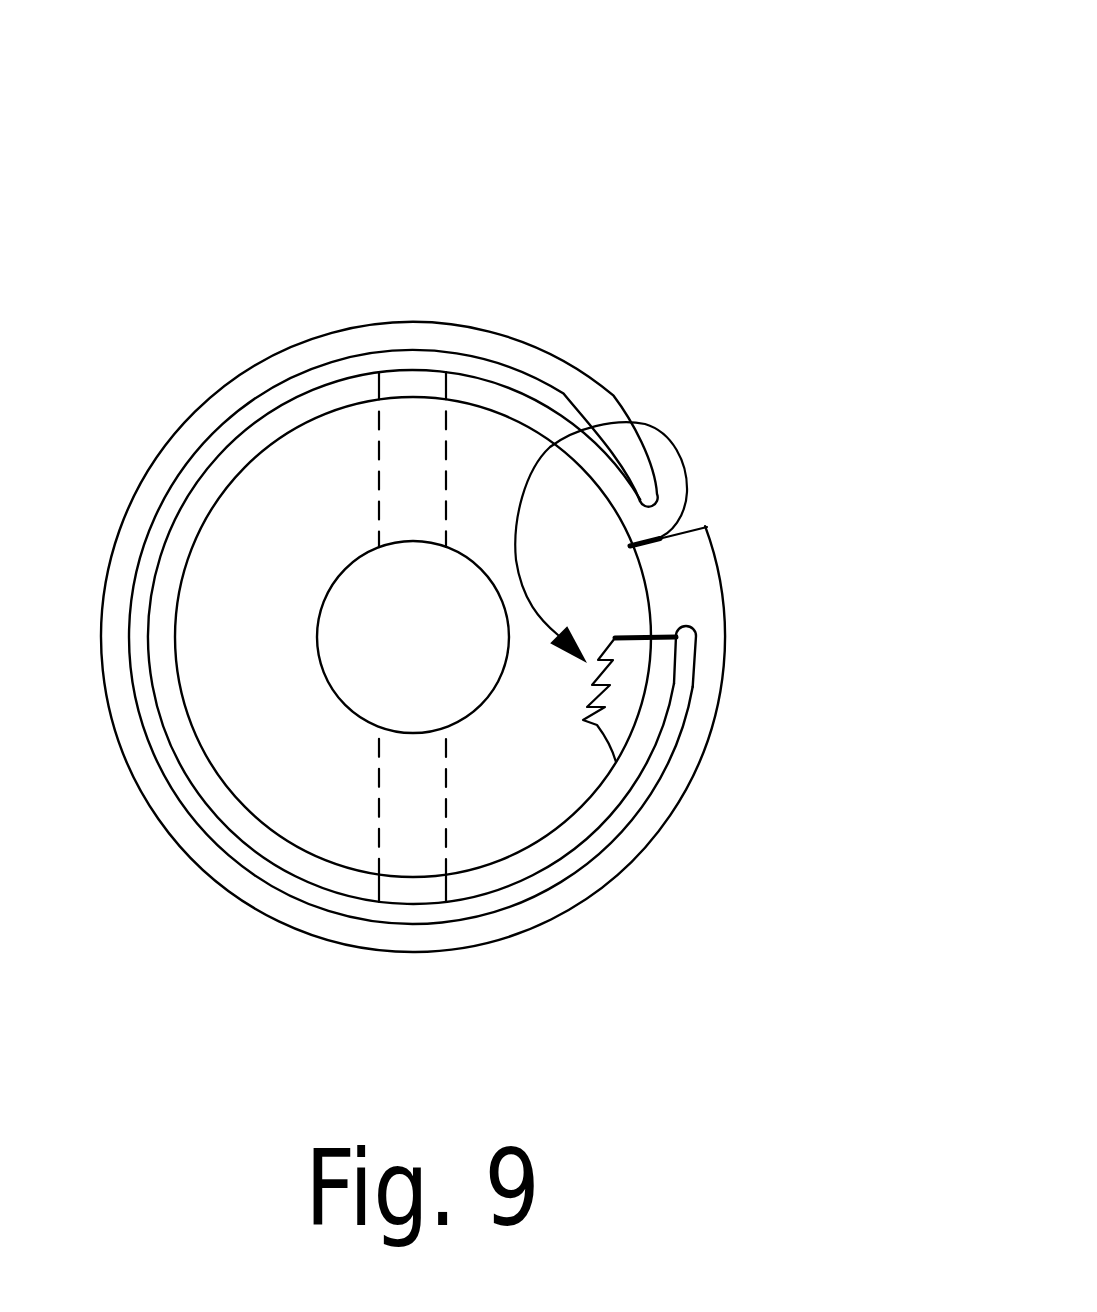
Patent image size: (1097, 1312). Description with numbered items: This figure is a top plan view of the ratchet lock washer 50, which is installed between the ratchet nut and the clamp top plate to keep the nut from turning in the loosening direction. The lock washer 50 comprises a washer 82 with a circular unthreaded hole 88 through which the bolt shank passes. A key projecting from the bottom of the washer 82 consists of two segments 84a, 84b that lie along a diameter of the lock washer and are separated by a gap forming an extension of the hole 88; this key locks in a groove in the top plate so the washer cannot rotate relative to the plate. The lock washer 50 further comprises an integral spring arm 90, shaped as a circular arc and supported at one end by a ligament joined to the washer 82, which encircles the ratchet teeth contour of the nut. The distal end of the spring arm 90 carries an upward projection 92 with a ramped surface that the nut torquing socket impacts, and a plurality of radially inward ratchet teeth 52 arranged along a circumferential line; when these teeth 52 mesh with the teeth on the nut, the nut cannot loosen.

The ratchet lock washer 50 is at (733, 170).
The ratchet teeth 52 is at (640, 427).
The washer 82 is at (234, 700).
The key segment 84a is at (418, 812).
The key segment 84b is at (447, 497).
The circular unthreaded hole 88 is at (318, 627).
The spring arm 90 is at (470, 368).
The upward projection 92 is at (647, 673).